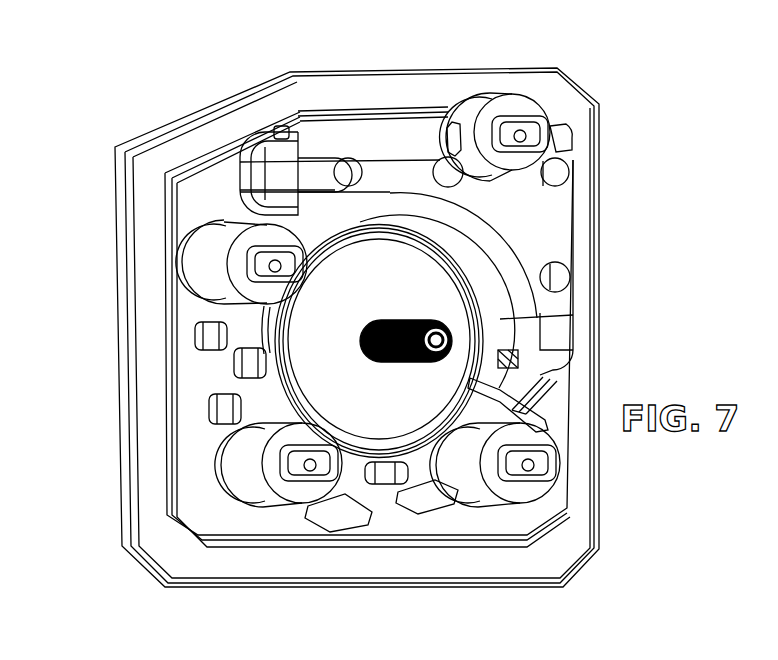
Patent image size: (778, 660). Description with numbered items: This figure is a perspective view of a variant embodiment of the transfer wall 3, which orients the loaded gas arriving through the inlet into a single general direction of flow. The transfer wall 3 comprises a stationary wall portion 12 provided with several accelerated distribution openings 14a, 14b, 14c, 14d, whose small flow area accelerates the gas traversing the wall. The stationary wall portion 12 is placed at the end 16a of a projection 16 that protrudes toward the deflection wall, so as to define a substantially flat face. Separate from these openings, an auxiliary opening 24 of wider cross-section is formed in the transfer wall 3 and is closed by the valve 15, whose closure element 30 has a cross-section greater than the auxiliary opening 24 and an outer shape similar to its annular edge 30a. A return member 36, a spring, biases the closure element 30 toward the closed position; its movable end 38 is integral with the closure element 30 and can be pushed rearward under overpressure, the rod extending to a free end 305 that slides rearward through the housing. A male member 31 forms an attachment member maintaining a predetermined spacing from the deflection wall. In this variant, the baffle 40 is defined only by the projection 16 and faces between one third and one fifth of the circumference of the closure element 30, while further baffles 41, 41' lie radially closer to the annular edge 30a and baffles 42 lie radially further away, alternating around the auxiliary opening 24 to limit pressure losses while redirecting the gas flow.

The transfer wall 3 is at (98, 564).
The stationary wall portion 12 is at (562, 335).
The accelerated distribution opening 14a is at (340, 153).
The accelerated distribution opening 14b is at (450, 117).
The accelerated distribution opening 14c is at (570, 158).
The accelerated distribution opening 14d is at (573, 273).
The valve 15 is at (343, 286).
The projection 16 is at (368, 145).
The end of the projection 16a is at (403, 172).
The auxiliary opening 24 is at (467, 377).
The closure element 30 is at (318, 392).
The annular edge 30a is at (262, 318).
The male member 31 is at (543, 102).
The return member 36 is at (390, 320).
The movable end 38 is at (358, 342).
The baffle 40 is at (482, 268).
The baffle 41 is at (229, 431).
The baffle 41' is at (497, 532).
The baffle 42 is at (333, 512).
The free end 305 is at (452, 332).